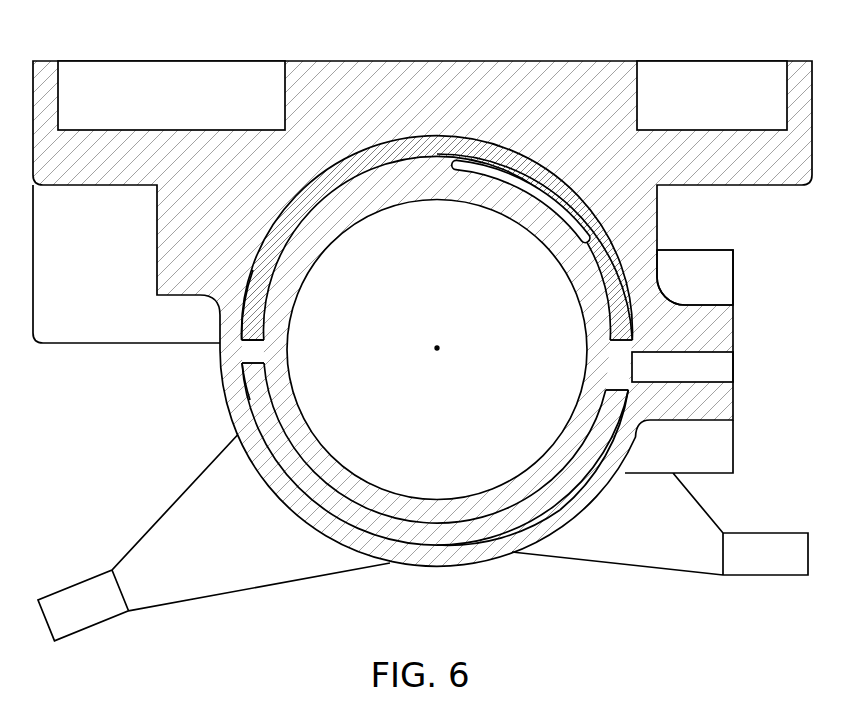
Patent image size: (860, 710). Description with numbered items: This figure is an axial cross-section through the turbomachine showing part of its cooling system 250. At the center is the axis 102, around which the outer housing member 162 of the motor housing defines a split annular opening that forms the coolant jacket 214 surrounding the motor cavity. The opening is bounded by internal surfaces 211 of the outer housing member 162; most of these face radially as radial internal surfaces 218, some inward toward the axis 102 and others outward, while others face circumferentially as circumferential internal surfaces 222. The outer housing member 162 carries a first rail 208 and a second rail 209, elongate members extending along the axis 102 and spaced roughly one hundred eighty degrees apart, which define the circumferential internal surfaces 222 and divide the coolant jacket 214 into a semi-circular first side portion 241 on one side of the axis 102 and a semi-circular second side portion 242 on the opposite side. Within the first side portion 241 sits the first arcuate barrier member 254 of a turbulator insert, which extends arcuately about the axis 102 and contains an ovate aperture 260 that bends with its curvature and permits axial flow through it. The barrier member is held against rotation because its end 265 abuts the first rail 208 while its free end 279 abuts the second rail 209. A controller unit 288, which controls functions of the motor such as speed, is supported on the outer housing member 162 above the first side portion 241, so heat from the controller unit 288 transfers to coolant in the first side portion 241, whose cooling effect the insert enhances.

The axis 102 is at (437, 346).
The outer housing member 162 is at (422, 351).
The first rail 208 is at (615, 352).
The second rail 209 is at (257, 353).
The internal surfaces 211 is at (364, 531).
The coolant jacket 214 is at (421, 533).
The radial internal surfaces 218 is at (360, 172).
The circumferential internal surfaces 222 is at (251, 366).
The first side portion 241 is at (574, 247).
The second side portion 242 is at (613, 463).
The cooling system 250 is at (500, 564).
The first arcuate barrier member 254 is at (280, 243).
The aperture 260 is at (500, 172).
The end 265 is at (617, 304).
The free end 279 is at (253, 329).
The controller unit 288 is at (146, 73).